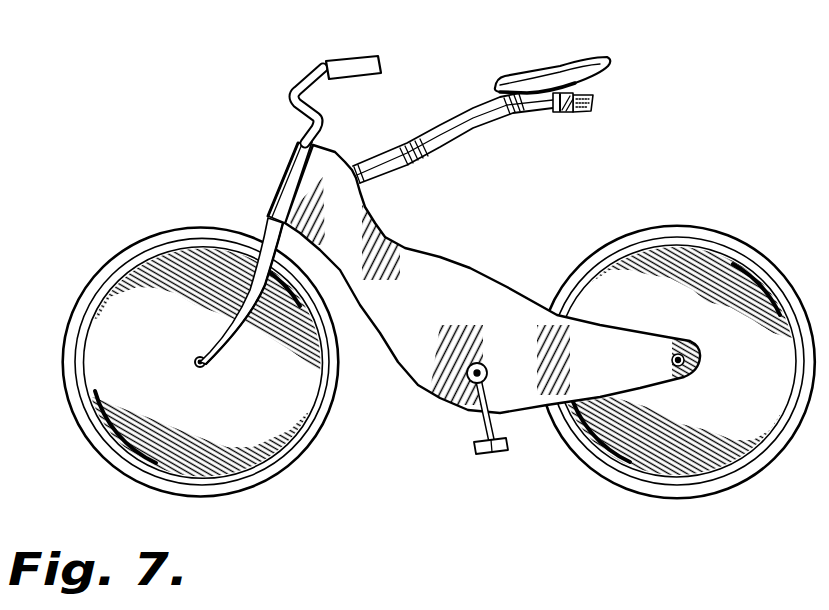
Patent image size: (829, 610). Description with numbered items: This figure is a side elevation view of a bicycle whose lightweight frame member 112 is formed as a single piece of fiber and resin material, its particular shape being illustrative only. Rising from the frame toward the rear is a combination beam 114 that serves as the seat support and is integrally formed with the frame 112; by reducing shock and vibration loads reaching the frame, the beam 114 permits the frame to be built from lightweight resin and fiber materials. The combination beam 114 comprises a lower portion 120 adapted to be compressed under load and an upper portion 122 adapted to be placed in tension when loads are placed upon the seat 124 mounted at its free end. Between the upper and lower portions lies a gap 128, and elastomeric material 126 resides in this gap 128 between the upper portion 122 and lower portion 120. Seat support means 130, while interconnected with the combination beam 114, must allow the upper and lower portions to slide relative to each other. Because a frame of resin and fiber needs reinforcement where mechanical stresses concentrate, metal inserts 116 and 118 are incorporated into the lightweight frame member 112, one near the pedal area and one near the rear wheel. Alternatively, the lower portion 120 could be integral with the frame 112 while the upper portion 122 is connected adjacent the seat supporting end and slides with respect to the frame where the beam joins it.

The frame member 112 is at (462, 272).
The combination beam 114 is at (468, 105).
The metal insert 116 is at (460, 403).
The metal insert 118 is at (676, 354).
The lower portion 120 is at (460, 140).
The upper portion 122 is at (433, 132).
The seat 124 is at (612, 61).
The elastomeric material 126 is at (411, 168).
The gap 128 is at (603, 104).
The seat support means 130 is at (558, 111).